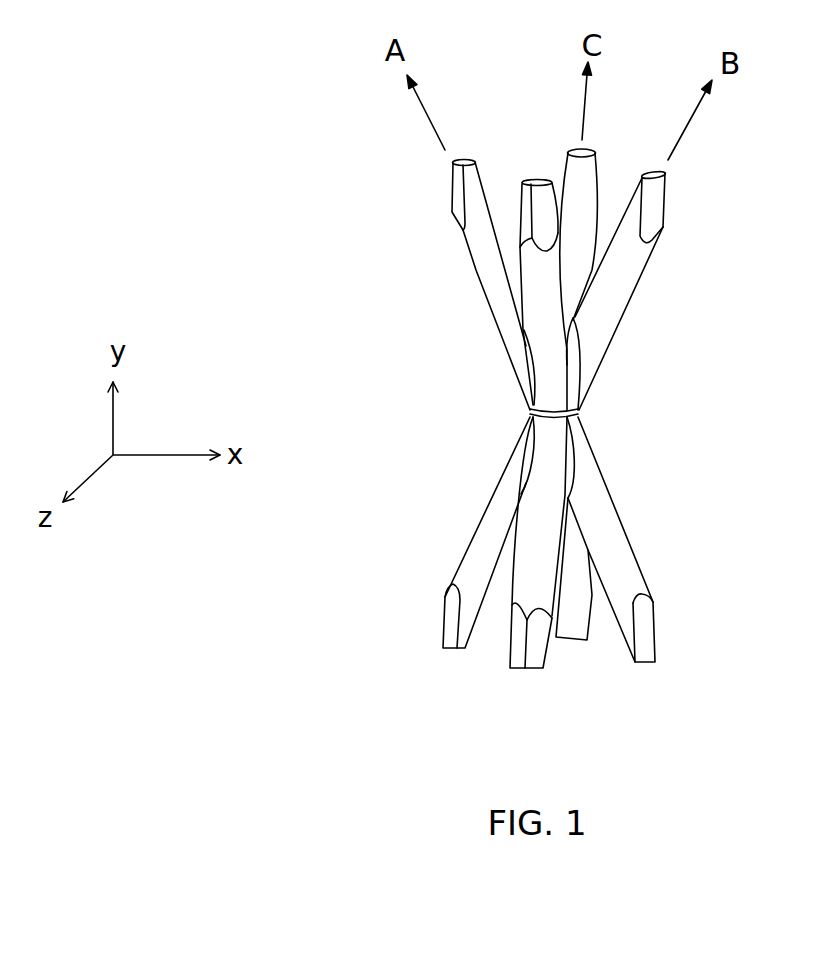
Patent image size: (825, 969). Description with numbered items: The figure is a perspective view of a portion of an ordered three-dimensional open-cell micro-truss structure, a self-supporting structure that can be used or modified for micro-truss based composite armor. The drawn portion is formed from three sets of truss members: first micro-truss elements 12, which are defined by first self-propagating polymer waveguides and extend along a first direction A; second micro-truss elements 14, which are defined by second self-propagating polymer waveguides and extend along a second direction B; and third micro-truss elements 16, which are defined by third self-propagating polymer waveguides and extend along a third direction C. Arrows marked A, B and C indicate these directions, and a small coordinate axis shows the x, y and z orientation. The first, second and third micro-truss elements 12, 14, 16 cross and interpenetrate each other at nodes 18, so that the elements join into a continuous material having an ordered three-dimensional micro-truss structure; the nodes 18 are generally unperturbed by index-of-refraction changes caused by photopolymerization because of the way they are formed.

The first micro-truss elements 12 is at (452, 222).
The second micro-truss elements 14 is at (667, 238).
The third micro-truss elements 16 is at (520, 677).
The nodes 18 is at (592, 403).